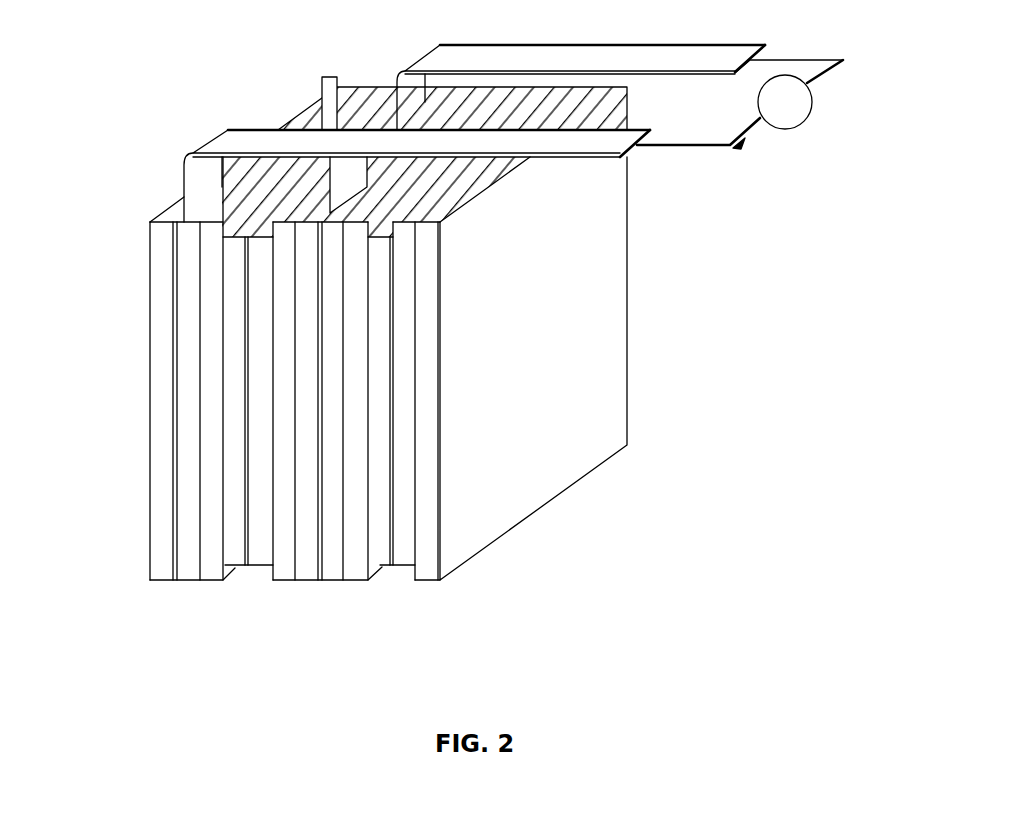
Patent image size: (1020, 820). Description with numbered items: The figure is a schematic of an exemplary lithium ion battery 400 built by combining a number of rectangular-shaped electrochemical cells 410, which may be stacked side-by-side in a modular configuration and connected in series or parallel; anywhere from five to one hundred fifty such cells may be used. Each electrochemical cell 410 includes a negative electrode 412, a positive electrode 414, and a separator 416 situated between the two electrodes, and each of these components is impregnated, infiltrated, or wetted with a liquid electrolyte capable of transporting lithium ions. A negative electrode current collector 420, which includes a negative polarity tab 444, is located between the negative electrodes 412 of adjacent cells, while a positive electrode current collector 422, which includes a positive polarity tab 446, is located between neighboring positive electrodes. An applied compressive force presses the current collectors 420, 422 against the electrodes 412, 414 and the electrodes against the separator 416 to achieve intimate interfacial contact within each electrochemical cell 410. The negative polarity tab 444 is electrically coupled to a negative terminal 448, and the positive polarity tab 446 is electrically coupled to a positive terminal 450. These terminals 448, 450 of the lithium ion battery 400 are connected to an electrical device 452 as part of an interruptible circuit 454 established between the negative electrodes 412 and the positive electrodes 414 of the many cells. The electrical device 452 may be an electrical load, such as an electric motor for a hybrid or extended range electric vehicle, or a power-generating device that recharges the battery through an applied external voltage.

The lithium ion battery 400 is at (175, 88).
The electrochemical cell 410 is at (247, 568).
The negative electrode 412 is at (185, 497).
The positive electrode 414 is at (262, 300).
The separator 416 is at (210, 450).
The negative electrode current collector 420 is at (180, 356).
The positive electrode current collector 422 is at (245, 330).
The negative polarity tab 444 is at (184, 186).
The positive polarity tab 446 is at (386, 103).
The negative terminal 448 is at (593, 157).
The positive terminal 450 is at (645, 75).
The electrical device 452 is at (787, 105).
The interruptible circuit 454 is at (738, 147).